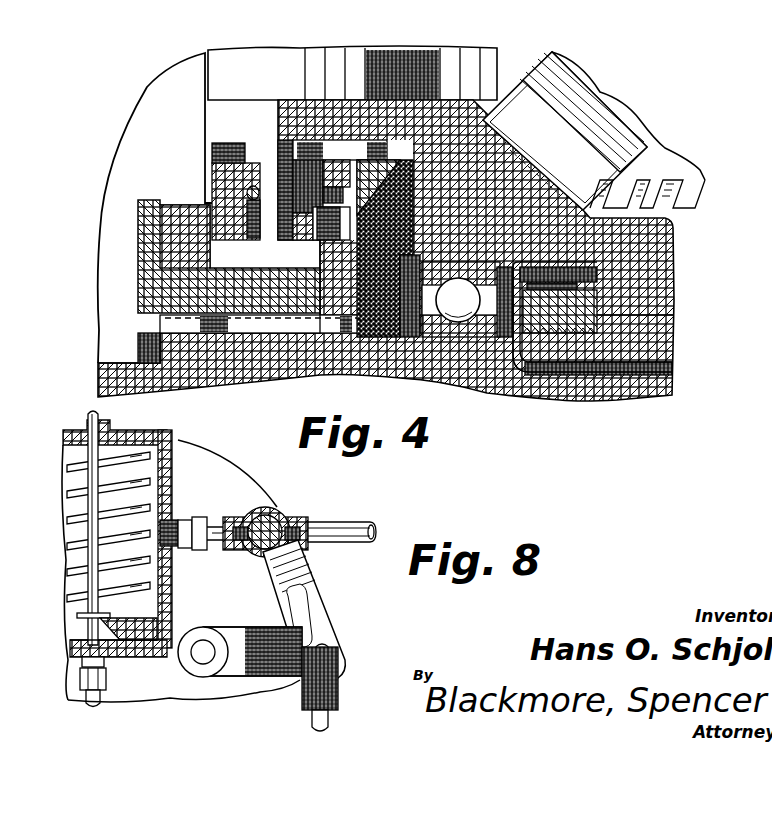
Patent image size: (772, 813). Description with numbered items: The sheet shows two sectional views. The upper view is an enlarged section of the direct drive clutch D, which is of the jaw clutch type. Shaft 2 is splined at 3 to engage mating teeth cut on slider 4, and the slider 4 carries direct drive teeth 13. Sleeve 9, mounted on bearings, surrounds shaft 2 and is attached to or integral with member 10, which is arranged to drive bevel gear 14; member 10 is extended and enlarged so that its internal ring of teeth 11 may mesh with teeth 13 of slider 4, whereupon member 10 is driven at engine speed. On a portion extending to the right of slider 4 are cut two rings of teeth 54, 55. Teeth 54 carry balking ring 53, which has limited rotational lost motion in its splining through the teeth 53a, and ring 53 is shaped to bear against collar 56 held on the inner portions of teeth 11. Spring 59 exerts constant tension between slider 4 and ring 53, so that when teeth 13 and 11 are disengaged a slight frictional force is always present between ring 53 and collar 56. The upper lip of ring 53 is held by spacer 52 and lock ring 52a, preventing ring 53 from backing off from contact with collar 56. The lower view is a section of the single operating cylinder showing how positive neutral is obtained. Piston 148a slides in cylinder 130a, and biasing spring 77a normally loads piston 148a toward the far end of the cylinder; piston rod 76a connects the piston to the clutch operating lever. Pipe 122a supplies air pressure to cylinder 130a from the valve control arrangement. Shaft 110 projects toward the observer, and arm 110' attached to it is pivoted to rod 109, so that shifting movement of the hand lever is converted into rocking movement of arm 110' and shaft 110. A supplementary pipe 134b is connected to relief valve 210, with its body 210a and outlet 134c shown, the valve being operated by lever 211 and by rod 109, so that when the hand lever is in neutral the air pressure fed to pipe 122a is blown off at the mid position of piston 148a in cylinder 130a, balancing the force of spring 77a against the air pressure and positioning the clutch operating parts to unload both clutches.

In FIG. 4, the direct drive clutch D is at (200, 43).
In FIG. 4, the shaft 2 is at (110, 380).
In FIG. 4, the spline 3 is at (160, 333).
In FIG. 4, the slider 4 is at (138, 222).
In FIG. 4, the sleeve 9 is at (657, 337).
In FIG. 4, the member 10 is at (650, 238).
In FIG. 4, the internal ring of teeth 11 is at (293, 138).
In FIG. 4, the direct drive teeth 13 is at (213, 147).
In FIG. 4, the bevel gear 14 is at (573, 77).
In FIG. 4, the spacer 52 is at (343, 153).
In FIG. 4, the lock ring 52a is at (303, 142).
In FIG. 4, the balking ring 53 is at (317, 213).
In FIG. 4, the teeth 53a is at (353, 317).
In FIG. 4, the ring of teeth 54 is at (290, 325).
In FIG. 4, the ring of teeth 55 is at (247, 217).
In FIG. 4, the collar 56 is at (372, 215).
In FIG. 4, the spring 59 is at (247, 191).
In FIG. 8, the piston rod 76a is at (88, 415).
In FIG. 8, the biasing spring 77a is at (163, 468).
In FIG. 8, the rod 109 is at (330, 718).
In FIG. 8, the shaft 110 is at (192, 664).
In FIG. 8, the arm 110' is at (270, 669).
In FIG. 8, the pipe 122a is at (85, 705).
In FIG. 8, the cylinder 130a is at (153, 433).
In FIG. 8, the supplementary pipe 134b is at (212, 528).
In FIG. 8, the rod 134c is at (337, 527).
In FIG. 8, the piston 148a is at (78, 623).
In FIG. 8, the relief valve 210 is at (261, 514).
In FIG. 8, the ball socket 210a is at (280, 507).
In FIG. 8, the lever 211 is at (305, 578).